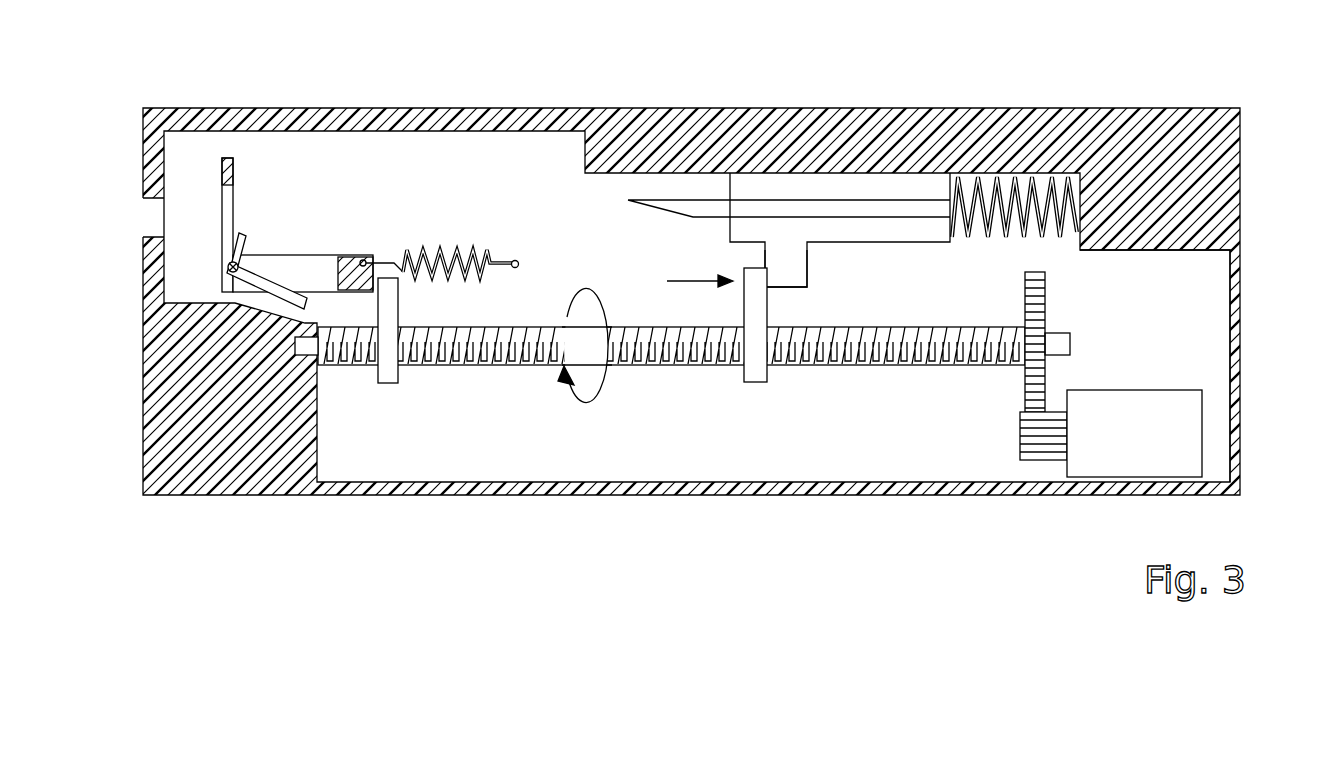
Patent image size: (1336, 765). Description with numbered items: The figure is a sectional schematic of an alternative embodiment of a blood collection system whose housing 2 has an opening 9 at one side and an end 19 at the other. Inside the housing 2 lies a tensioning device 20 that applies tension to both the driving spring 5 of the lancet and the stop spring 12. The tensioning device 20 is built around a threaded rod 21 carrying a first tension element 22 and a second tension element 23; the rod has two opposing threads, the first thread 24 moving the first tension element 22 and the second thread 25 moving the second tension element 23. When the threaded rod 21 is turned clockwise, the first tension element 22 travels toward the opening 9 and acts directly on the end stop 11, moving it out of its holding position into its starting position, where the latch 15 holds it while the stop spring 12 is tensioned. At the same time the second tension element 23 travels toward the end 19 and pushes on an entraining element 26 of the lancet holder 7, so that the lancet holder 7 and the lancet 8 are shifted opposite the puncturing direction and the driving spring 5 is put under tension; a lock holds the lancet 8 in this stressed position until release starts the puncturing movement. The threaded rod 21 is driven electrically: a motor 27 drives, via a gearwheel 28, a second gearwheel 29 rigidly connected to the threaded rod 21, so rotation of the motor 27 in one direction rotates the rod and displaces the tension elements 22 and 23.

The housing 2 is at (1175, 137).
The driving spring 5 is at (1000, 182).
The lancet holder 7 is at (845, 190).
The lancet 8 is at (702, 210).
The opening 9 is at (150, 221).
The end stop 11 is at (284, 238).
The stop spring 12 is at (458, 252).
The latch 15 is at (300, 293).
The end of the housing 19 is at (1223, 226).
The tensioning device 20 is at (660, 378).
The threaded rod 21 is at (522, 353).
The first tension element 22 is at (392, 309).
The second tension element 23 is at (757, 314).
The first thread 24 is at (467, 353).
The second thread 25 is at (811, 357).
The entraining element 26 is at (793, 258).
The motor 27 is at (1120, 449).
The gearwheel 28 is at (1042, 448).
The second gearwheel 29 is at (1037, 383).